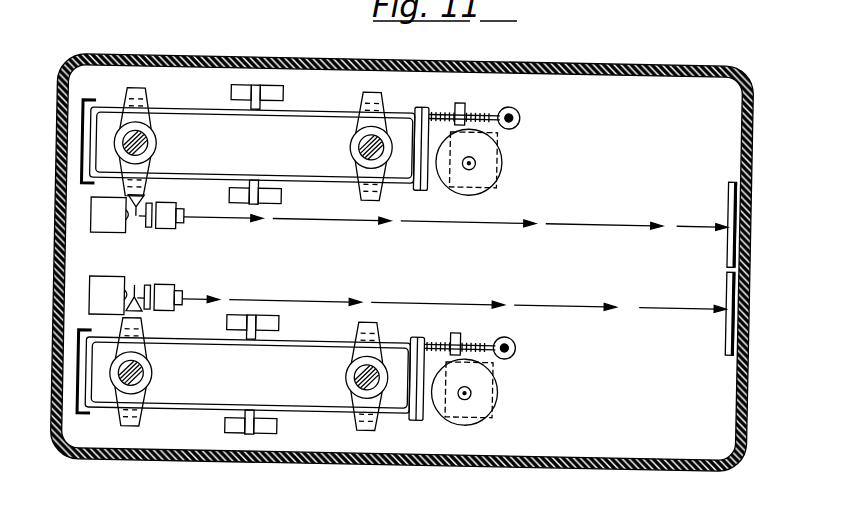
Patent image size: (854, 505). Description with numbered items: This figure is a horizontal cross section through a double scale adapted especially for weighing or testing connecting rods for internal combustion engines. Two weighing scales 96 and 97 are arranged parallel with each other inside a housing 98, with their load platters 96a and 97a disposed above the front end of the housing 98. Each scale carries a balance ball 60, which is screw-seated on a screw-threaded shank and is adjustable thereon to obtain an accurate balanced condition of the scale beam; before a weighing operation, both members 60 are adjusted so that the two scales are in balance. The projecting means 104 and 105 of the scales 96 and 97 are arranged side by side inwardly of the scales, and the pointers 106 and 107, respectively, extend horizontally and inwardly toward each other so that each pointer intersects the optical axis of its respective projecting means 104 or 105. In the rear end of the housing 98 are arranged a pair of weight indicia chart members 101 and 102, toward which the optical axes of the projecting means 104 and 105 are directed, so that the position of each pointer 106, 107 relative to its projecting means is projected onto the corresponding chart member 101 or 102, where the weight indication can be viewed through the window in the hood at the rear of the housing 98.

The housing 98 is at (270, 61).
The weighing scale 96 is at (300, 152).
The load platter 96a is at (148, 148).
The weighing scale 97 is at (296, 375).
The load platter 97a is at (148, 378).
The balance ball 60 is at (457, 102).
The weight indicia chart member 101 is at (727, 186).
The weight indicia chart member 102 is at (727, 337).
The projecting means 104 is at (169, 232).
The projecting means 105 is at (178, 291).
The pointer 106 is at (132, 234).
The pointer 107 is at (141, 287).